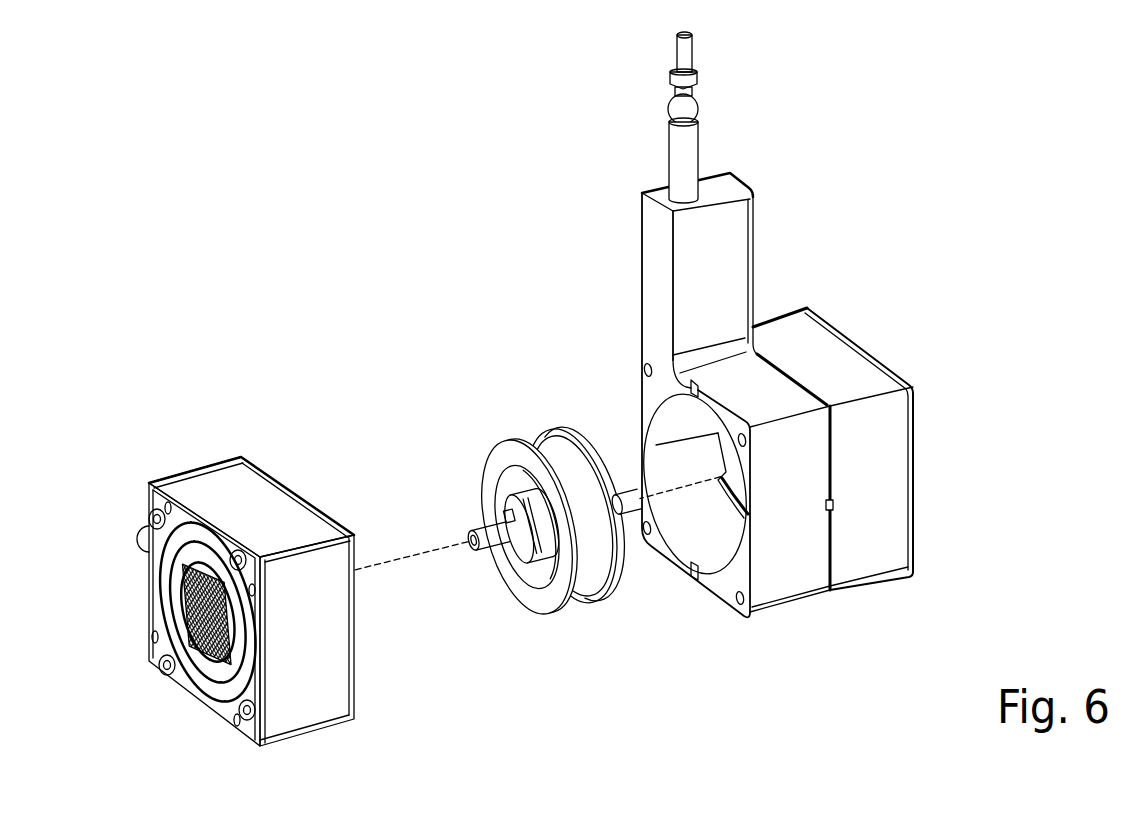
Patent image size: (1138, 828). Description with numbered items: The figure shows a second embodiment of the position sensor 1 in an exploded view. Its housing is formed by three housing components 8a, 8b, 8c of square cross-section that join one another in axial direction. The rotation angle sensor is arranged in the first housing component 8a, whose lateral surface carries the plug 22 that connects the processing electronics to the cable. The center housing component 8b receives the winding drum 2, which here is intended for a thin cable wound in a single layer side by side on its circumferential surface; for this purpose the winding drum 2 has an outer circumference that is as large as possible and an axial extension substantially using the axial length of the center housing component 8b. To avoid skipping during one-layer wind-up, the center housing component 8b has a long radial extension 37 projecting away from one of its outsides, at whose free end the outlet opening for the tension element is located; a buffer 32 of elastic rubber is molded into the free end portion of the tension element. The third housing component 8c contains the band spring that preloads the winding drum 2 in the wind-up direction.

The position sensor 1 is at (350, 258).
The winding drum 2 is at (538, 524).
The first housing component 8a is at (318, 695).
The center housing component 8b is at (778, 590).
The third housing component 8c is at (868, 568).
The plug 22 is at (141, 532).
The buffer 32 is at (688, 165).
The bracket / holder 37 is at (722, 273).